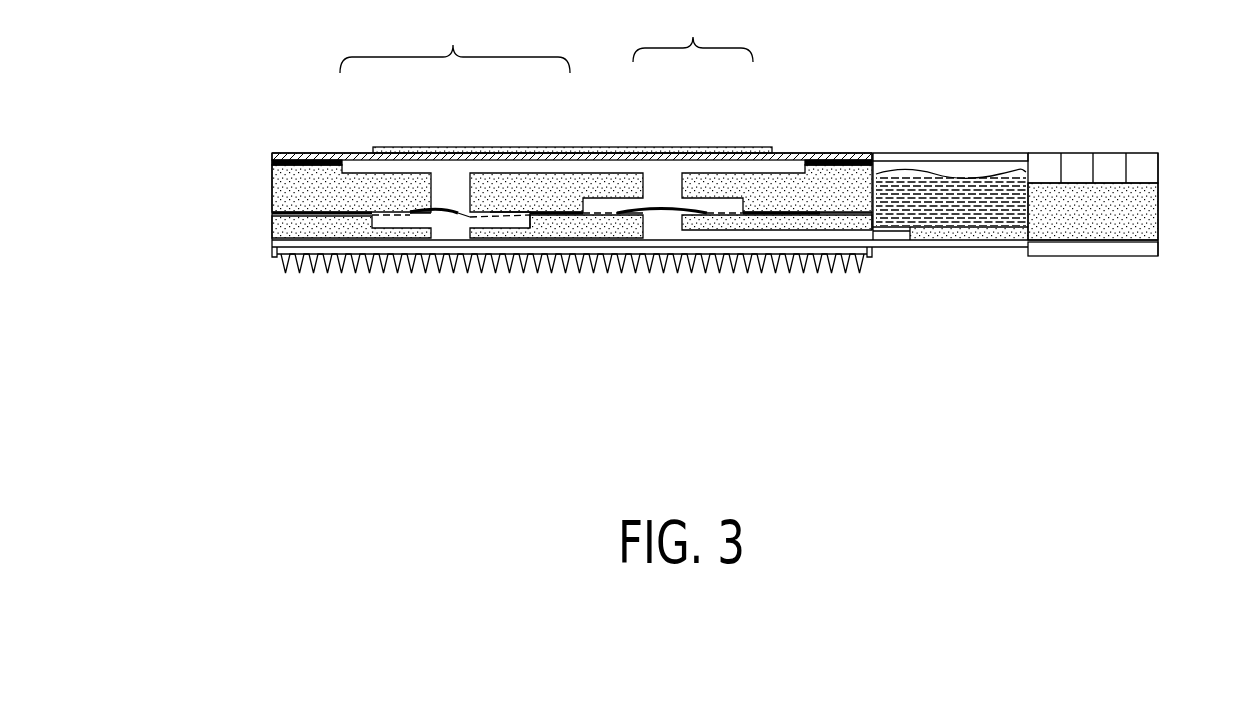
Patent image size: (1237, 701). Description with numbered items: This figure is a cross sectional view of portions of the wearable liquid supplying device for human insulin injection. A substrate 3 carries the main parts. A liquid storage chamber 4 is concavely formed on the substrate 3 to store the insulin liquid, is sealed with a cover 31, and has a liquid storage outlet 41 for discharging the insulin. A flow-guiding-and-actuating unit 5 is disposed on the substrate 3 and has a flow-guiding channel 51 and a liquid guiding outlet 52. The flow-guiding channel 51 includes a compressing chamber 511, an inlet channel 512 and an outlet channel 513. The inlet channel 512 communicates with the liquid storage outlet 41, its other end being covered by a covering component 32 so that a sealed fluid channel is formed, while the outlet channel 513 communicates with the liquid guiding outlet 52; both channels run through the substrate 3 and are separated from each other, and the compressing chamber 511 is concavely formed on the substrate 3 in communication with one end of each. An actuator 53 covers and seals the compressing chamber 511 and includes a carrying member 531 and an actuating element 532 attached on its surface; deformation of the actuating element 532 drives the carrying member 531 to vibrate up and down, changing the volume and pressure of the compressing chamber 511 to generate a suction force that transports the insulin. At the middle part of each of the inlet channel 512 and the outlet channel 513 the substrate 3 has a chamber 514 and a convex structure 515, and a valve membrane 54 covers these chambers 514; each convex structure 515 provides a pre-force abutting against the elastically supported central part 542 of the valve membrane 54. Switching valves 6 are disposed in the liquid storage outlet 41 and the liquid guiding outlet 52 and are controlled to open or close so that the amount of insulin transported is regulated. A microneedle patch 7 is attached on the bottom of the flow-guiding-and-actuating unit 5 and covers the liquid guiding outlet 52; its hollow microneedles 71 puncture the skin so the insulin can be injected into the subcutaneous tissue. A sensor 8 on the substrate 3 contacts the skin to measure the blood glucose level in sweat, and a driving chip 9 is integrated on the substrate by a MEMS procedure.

The substrate 3 is at (1148, 215).
The cover 31 is at (890, 160).
The covering component 32 is at (1015, 243).
The liquid storage chamber 4 is at (997, 167).
The liquid storage outlet 41 is at (880, 229).
The flow-guiding-and-actuating unit 5 is at (798, 128).
The flow-guiding channel 51 is at (455, 41).
The compressing chamber 511 is at (563, 173).
The inlet channel 512 is at (667, 187).
The outlet channel 513 is at (457, 182).
The chamber 514 is at (512, 223).
The convex structure 515 is at (420, 213).
The liquid guiding outlet 52 is at (438, 237).
The actuator 53 is at (693, 31).
The carrying member 531 is at (680, 150).
The actuating element 532 is at (740, 148).
The valve membrane 54 is at (288, 213).
The central part 542 is at (453, 215).
The switching valve 6 is at (442, 243).
The microneedle patch 7 is at (870, 257).
The microneedles 71 is at (700, 273).
The sensor 8 is at (1098, 250).
The driving chip 9 is at (1112, 168).